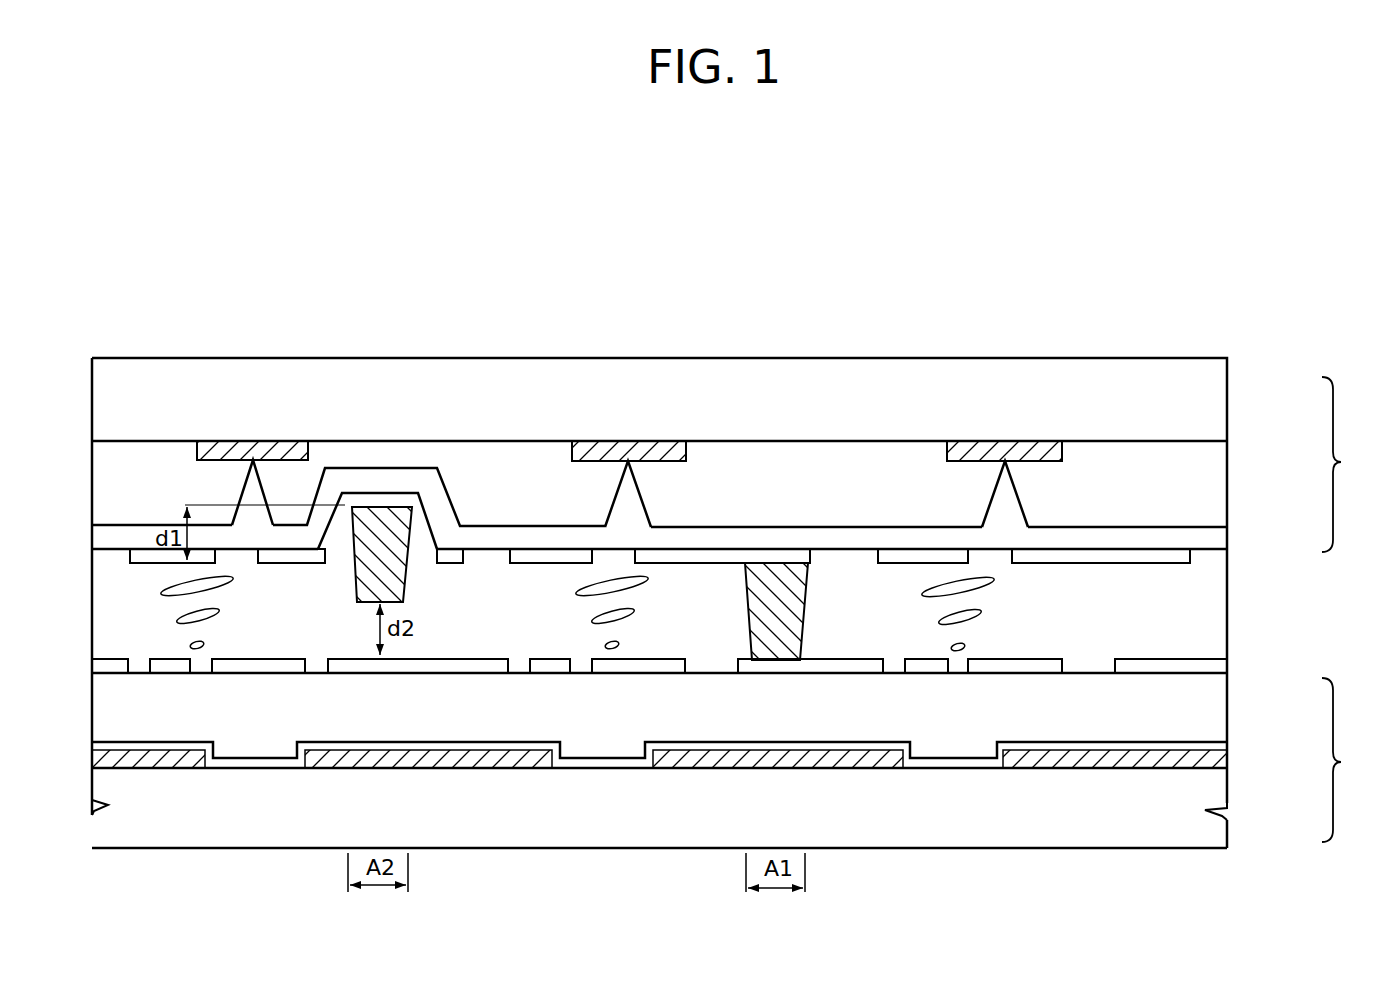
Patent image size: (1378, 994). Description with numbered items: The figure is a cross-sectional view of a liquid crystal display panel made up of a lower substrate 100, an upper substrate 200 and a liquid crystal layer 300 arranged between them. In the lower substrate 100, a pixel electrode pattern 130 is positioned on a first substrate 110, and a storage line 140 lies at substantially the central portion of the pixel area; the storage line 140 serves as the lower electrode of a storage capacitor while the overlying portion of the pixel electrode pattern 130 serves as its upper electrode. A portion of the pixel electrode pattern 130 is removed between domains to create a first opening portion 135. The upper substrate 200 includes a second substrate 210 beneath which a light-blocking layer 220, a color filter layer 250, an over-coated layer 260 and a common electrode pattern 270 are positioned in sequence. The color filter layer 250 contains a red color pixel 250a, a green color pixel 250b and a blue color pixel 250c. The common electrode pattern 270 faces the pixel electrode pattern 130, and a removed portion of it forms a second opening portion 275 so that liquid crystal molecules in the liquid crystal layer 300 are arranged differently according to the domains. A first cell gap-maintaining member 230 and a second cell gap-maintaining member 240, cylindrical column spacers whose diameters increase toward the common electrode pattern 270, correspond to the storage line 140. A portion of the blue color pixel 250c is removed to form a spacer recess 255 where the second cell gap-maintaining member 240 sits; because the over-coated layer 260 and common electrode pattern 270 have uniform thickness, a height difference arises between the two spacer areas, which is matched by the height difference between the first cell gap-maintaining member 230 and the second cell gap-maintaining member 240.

The lower substrate 100 is at (1350, 760).
The first substrate 110 is at (1220, 830).
The pixel electrode pattern 130 is at (1220, 671).
The first opening portion 135 is at (1097, 665).
The storage line 140 is at (1220, 768).
The upper substrate 200 is at (1350, 464).
The second substrate 210 is at (1220, 386).
The light-blocking layer 220 is at (1033, 444).
The first cell gap-maintaining member 230 is at (795, 612).
The second cell gap-maintaining member 240 is at (403, 589).
The color filter layer 250 is at (1233, 477).
The red color pixel 250a is at (862, 457).
The green color pixel 250b is at (145, 452).
The blue color pixel 250c is at (524, 455).
The spacer recess 255 is at (380, 488).
The over-coated layer 260 is at (1220, 535).
The common electrode pattern 270 is at (1173, 562).
The second opening portion 275 is at (998, 562).
The liquid crystal layer 300 is at (1220, 607).